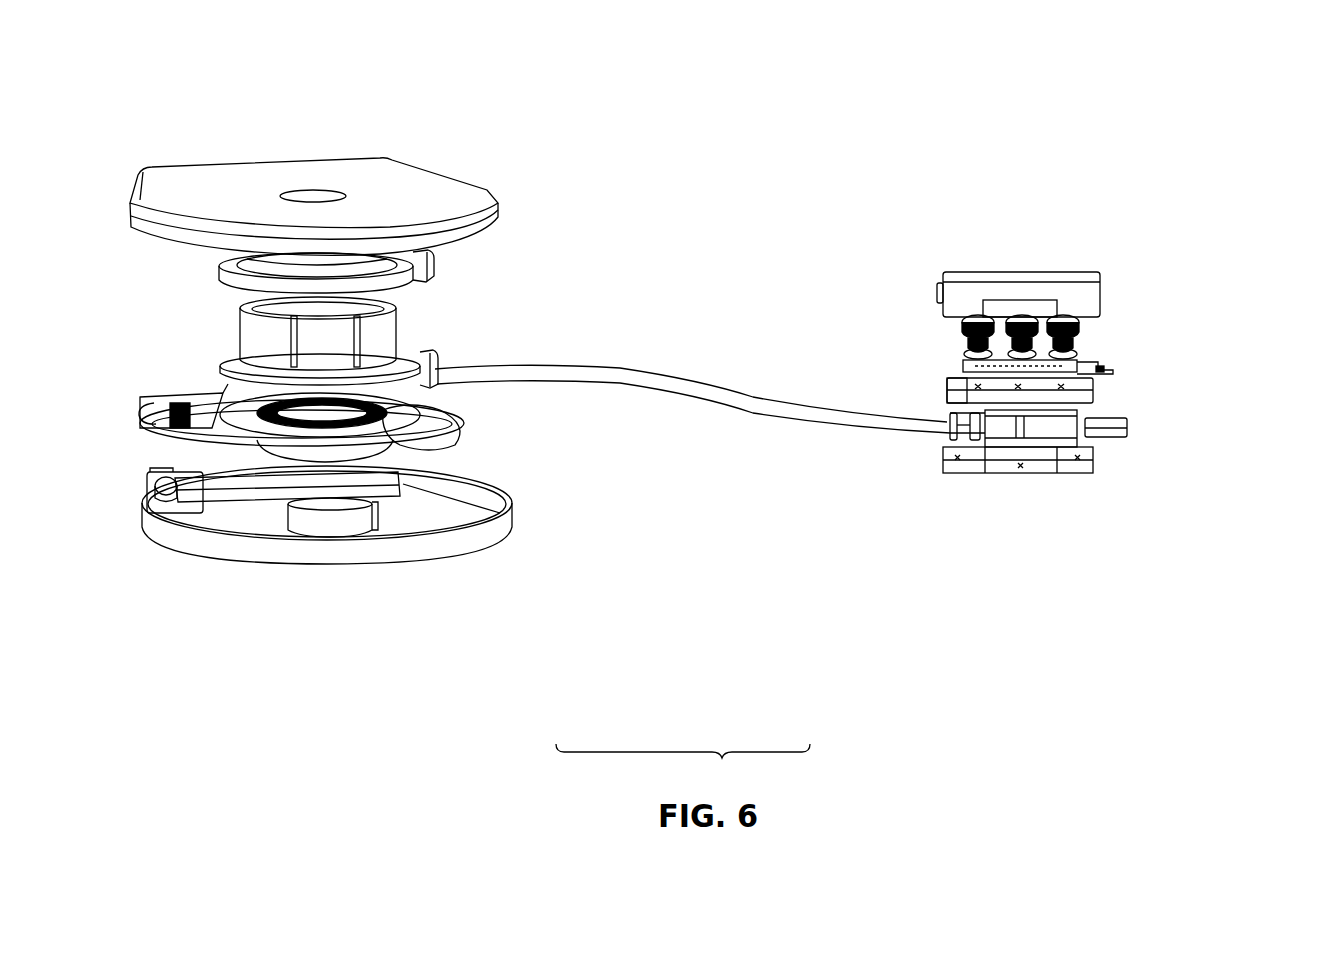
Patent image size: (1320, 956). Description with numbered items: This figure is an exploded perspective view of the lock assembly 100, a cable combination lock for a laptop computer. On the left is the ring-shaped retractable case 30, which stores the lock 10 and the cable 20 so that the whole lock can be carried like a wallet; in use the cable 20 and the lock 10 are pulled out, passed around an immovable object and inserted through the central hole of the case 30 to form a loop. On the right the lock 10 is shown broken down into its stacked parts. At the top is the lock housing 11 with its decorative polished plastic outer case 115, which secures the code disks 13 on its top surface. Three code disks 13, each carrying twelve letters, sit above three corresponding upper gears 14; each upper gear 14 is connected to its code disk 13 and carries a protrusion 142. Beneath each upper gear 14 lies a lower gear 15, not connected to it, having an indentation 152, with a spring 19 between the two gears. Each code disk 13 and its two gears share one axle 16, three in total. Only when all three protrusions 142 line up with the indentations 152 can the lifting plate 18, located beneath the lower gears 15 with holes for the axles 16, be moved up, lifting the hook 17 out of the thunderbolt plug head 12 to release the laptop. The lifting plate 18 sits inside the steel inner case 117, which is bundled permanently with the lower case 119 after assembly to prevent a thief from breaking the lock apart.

The lock assembly 100 is at (666, 230).
The retractable case 30 is at (507, 603).
The cable 20 is at (907, 325).
The lock 10 is at (1245, 283).
The lock housing 11 is at (1097, 230).
The outer case 115 is at (1080, 297).
The protrusion 142 is at (953, 330).
The indentation 152 is at (960, 353).
The code disk 13 is at (1080, 327).
The upper gear 14 is at (1080, 335).
The spring 19 is at (1080, 347).
The lower gear 15 is at (1080, 360).
The hook 17 is at (1080, 370).
The axle 16 is at (1087, 427).
The plug head 12 is at (1100, 437).
The lifting plate 18 is at (947, 387).
The inner case 117 is at (950, 413).
The lower case 119 is at (1090, 467).